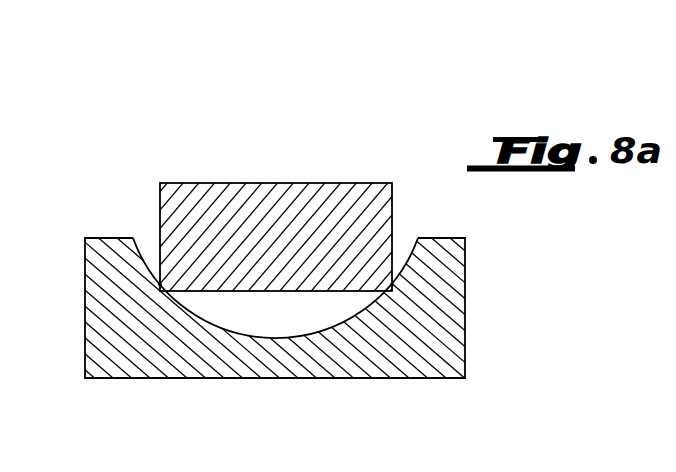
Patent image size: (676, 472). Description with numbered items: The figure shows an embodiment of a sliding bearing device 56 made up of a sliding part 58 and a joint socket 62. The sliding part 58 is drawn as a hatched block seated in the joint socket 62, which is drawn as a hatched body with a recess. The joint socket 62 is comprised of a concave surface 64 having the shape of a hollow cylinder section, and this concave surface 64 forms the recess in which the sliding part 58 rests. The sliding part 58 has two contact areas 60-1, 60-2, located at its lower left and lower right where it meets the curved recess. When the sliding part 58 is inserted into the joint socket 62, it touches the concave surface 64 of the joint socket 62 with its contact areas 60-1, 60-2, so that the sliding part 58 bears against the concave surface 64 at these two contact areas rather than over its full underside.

The sliding bearing device 56 is at (336, 130).
The sliding part 58 is at (244, 192).
The contact area 60-1 is at (390, 284).
The contact area 60-2 is at (162, 283).
The joint socket 62 is at (447, 328).
The concave surface 64 is at (236, 328).